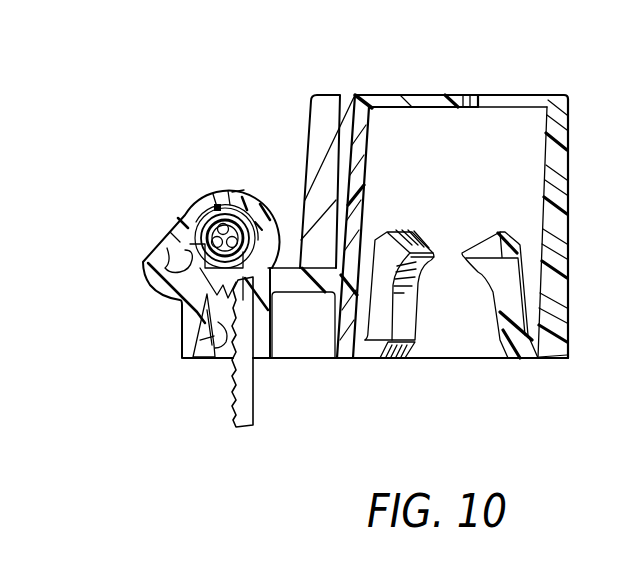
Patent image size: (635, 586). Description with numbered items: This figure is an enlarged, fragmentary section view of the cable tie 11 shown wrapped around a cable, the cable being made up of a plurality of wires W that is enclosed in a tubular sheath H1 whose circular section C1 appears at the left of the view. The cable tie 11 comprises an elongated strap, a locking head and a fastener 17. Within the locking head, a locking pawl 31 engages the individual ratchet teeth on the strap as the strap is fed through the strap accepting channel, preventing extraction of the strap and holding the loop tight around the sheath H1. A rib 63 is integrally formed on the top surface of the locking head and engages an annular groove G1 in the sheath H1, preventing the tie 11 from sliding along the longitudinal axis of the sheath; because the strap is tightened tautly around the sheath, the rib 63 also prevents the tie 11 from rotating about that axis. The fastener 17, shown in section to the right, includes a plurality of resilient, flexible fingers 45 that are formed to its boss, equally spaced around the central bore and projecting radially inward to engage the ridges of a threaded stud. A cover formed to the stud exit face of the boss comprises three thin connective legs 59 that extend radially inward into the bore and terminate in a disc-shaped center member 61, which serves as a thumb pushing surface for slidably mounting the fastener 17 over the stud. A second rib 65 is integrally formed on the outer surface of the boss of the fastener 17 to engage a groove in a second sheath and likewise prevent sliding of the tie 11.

The fastener 17 is at (470, 370).
The rib 65 is at (330, 95).
The connective legs 59 is at (392, 93).
The center member 61 is at (452, 94).
The fingers 45 is at (507, 272).
The rib 63 is at (145, 262).
The wafers W is at (193, 238).
The sheath H1 is at (238, 188).
The center reference point C1 is at (216, 203).
The annular groove G1 is at (260, 226).
The cable tie 11 is at (248, 403).
The locking pawl 31 is at (203, 360).